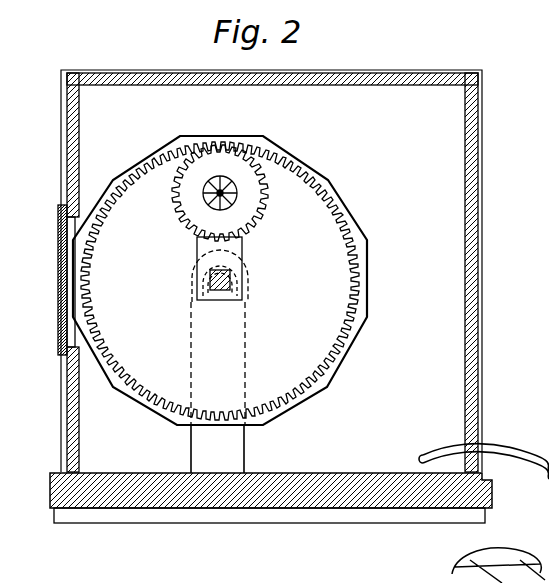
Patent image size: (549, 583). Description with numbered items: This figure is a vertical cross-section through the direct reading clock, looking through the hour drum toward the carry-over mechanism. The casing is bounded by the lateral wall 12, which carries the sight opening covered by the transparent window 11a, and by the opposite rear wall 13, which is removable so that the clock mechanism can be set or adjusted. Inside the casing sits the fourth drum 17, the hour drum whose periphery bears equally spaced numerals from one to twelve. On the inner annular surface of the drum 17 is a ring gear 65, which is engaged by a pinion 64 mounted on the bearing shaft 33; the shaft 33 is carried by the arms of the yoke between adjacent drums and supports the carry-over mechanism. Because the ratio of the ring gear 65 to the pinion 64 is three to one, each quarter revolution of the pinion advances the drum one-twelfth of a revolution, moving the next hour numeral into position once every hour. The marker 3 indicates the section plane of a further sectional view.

The transparent window 11a is at (62, 279).
The lateral wall 12 is at (75, 145).
The rear wall 13 is at (481, 288).
The fourth drum 17 is at (368, 281).
The bearing shaft 33 is at (204, 193).
The pinion 64 is at (250, 207).
The ring gear 65 is at (352, 261).
The section line 3- 3 is at (222, 42).